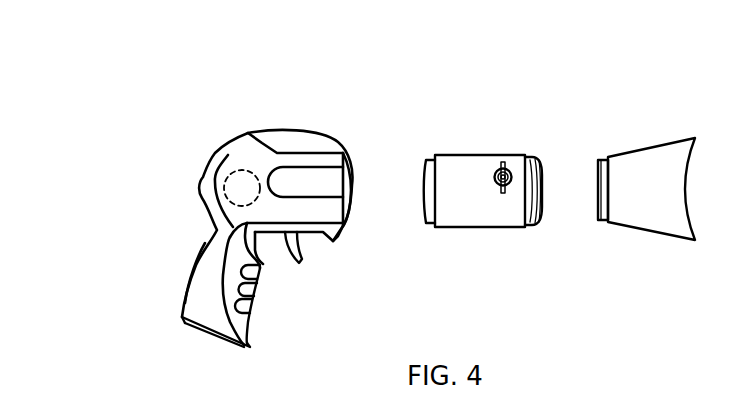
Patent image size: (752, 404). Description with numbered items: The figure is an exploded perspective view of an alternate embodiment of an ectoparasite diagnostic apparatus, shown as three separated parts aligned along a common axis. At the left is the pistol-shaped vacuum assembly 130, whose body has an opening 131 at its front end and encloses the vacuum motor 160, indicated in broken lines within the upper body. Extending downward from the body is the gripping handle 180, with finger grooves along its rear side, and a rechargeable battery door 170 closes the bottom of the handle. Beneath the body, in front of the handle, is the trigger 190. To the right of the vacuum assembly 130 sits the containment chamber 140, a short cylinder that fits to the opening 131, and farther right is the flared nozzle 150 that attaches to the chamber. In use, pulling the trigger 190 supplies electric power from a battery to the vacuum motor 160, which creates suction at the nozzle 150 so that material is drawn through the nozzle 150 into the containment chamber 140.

The vacuum assembly 130 is at (272, 104).
The opening 131 is at (352, 186).
The containment chamber 140 is at (480, 125).
The nozzle 150 is at (648, 167).
The vacuum motor 160 is at (243, 181).
The rechargeable battery door 170 is at (228, 350).
The gripping handle 180 is at (230, 290).
The trigger 190 is at (303, 253).